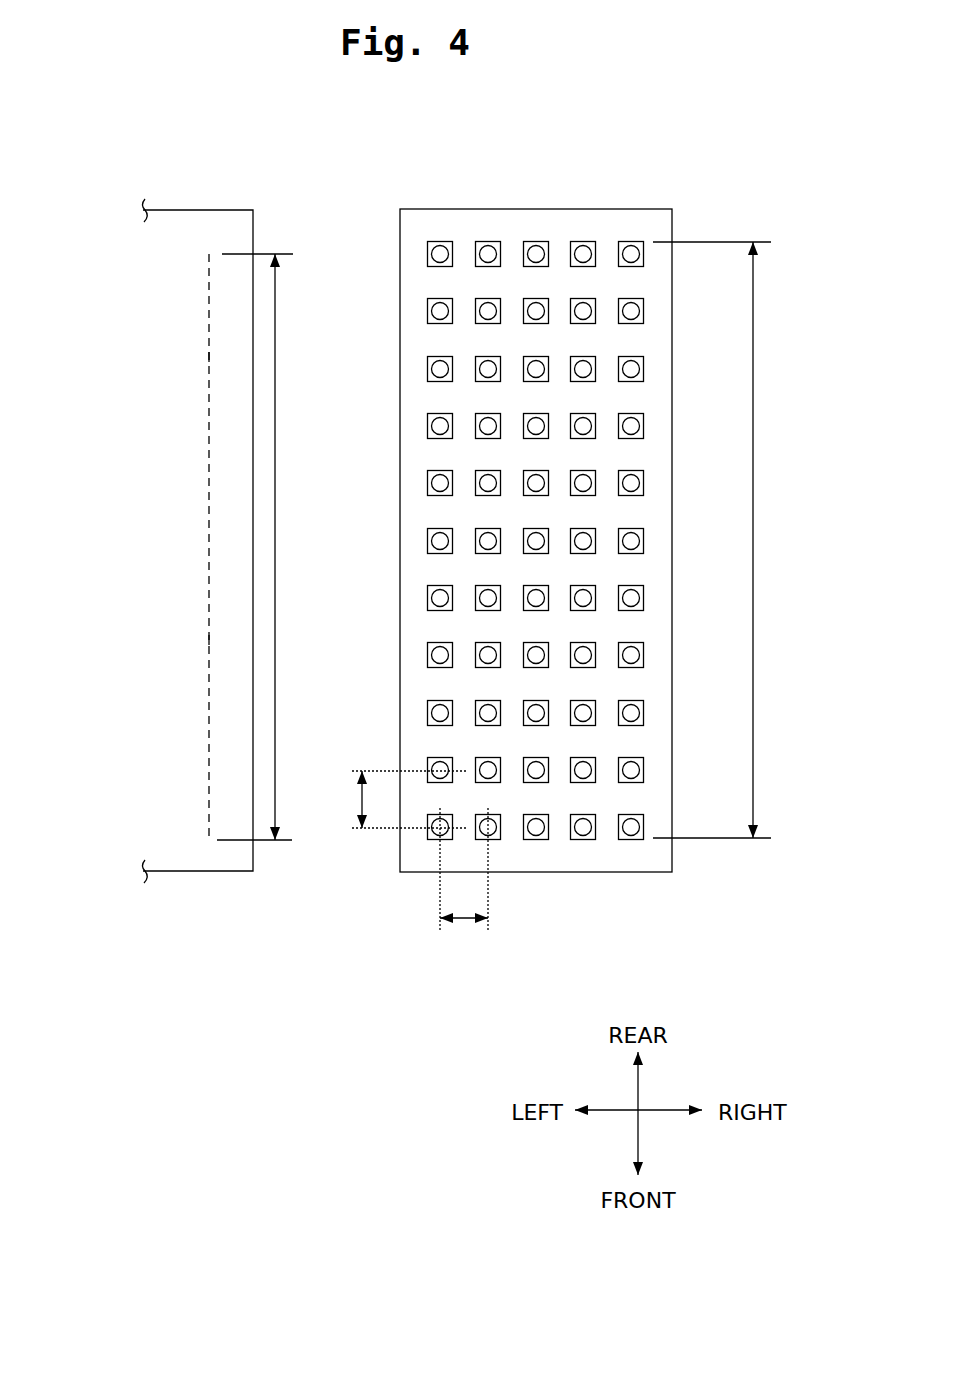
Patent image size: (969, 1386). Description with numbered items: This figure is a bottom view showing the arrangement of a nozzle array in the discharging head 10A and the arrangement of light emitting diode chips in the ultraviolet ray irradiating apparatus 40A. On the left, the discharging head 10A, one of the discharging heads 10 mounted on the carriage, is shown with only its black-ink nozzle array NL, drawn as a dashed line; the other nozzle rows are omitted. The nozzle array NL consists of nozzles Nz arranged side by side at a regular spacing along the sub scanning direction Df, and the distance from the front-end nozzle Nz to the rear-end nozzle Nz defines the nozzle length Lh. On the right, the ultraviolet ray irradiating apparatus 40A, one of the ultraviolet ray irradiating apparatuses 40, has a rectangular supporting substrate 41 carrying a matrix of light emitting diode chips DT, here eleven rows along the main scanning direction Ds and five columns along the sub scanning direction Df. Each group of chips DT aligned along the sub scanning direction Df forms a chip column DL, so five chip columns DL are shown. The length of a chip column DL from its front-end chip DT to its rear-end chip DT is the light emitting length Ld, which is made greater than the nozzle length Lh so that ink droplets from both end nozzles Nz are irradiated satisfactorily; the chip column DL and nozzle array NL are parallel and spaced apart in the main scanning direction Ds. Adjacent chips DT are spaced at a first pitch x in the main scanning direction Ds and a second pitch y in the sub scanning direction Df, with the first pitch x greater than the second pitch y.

The discharging head 10 is at (201, 488).
The discharging head 10A is at (180, 190).
The nozzle array NL is at (216, 226).
The nozzle Nz is at (209, 357).
The nozzle length Lh is at (267, 547).
The ultraviolet ray irradiating apparatus 40 is at (538, 547).
The ultraviolet ray irradiating apparatus 40A is at (538, 547).
The supporting substrate 41 is at (626, 228).
The chip column DL is at (538, 552).
The light emitting diode chip DT is at (643, 255).
The light emitting length Ld is at (724, 540).
The first pitch x is at (464, 870).
The second pitch y is at (409, 799).
The main scanning direction Ds is at (660, 1110).
The sub scanning direction Df is at (637, 1128).